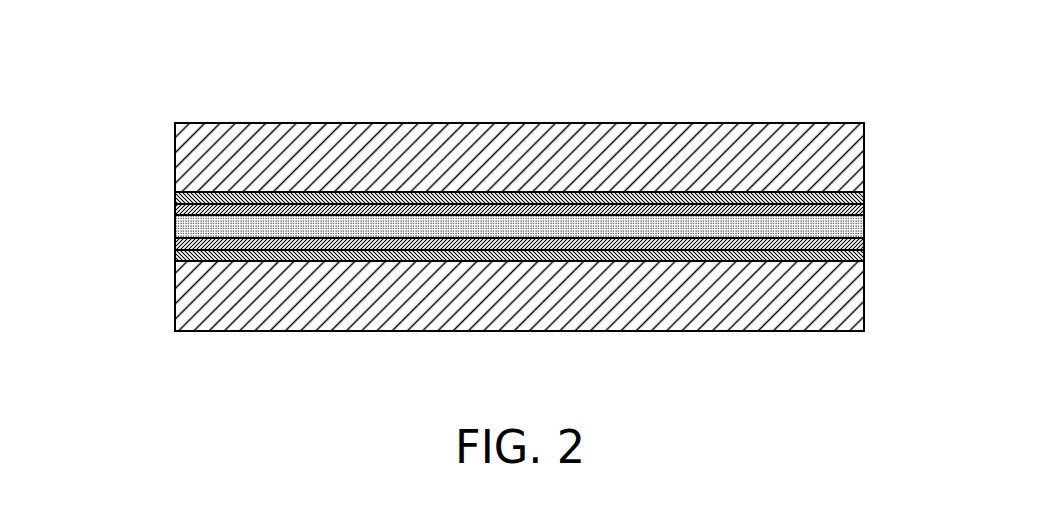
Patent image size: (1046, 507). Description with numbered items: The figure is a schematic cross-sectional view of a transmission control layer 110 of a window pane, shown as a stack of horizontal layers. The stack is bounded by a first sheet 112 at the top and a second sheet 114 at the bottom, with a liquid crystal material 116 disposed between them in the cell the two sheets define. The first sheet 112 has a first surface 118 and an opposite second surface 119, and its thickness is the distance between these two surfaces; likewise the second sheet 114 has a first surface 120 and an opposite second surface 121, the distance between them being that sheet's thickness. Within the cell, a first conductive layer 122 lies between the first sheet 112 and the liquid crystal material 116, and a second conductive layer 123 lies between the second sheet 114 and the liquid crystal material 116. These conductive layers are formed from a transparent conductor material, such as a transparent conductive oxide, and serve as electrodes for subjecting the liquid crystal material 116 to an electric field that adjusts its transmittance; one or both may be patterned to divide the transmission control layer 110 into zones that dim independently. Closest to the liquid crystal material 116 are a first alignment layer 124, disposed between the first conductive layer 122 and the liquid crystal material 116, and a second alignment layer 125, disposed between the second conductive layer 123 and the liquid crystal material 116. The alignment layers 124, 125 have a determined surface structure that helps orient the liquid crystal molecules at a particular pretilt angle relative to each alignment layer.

The transmission control layer 110 is at (519, 175).
The first sheet 112 is at (483, 140).
The second sheet 114 is at (481, 317).
The liquid crystal material 116 is at (475, 218).
The first surface 118 is at (569, 98).
The second surface 119 is at (564, 209).
The first surface 120 is at (564, 236).
The second surface 121 is at (564, 357).
The first conductive layer 122 is at (455, 165).
The second conductive layer 123 is at (453, 288).
The first alignment layer 124 is at (458, 189).
The second alignment layer 125 is at (455, 266).